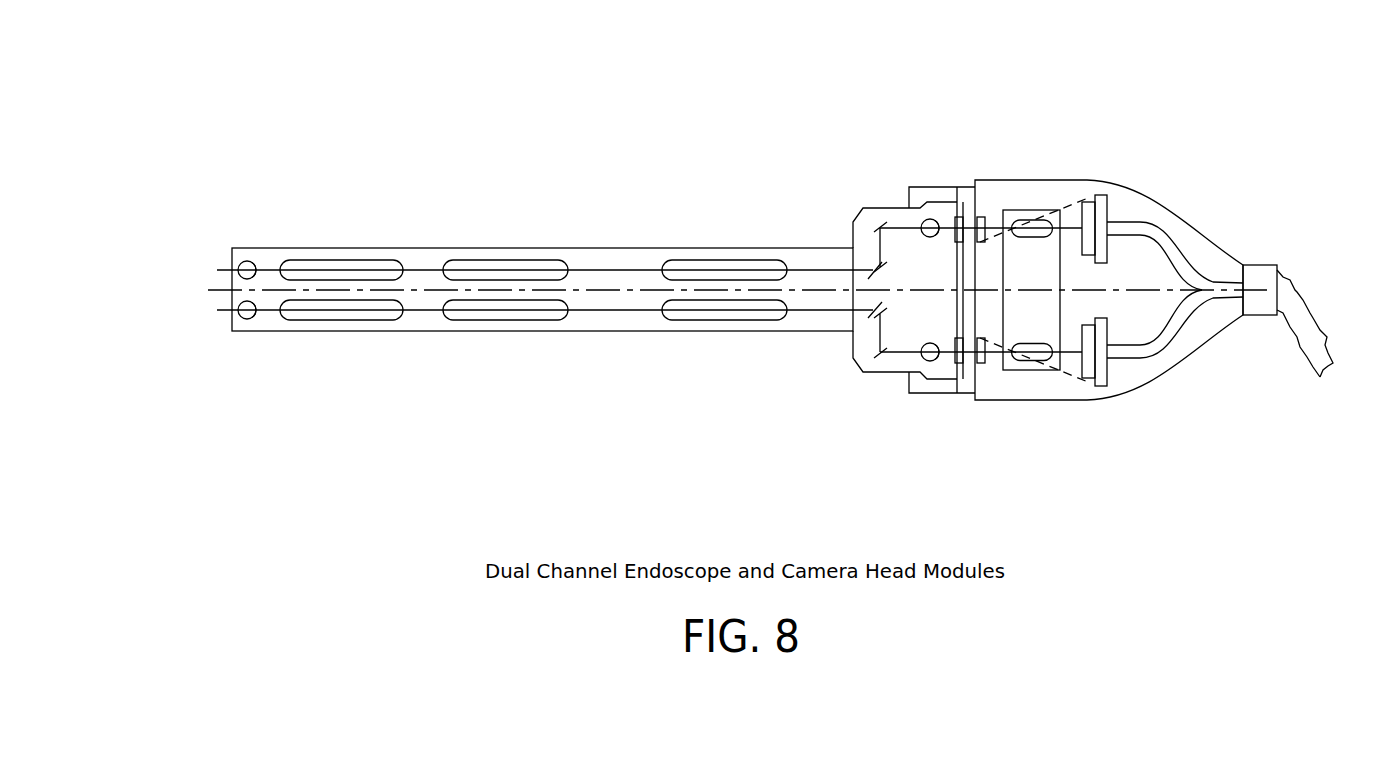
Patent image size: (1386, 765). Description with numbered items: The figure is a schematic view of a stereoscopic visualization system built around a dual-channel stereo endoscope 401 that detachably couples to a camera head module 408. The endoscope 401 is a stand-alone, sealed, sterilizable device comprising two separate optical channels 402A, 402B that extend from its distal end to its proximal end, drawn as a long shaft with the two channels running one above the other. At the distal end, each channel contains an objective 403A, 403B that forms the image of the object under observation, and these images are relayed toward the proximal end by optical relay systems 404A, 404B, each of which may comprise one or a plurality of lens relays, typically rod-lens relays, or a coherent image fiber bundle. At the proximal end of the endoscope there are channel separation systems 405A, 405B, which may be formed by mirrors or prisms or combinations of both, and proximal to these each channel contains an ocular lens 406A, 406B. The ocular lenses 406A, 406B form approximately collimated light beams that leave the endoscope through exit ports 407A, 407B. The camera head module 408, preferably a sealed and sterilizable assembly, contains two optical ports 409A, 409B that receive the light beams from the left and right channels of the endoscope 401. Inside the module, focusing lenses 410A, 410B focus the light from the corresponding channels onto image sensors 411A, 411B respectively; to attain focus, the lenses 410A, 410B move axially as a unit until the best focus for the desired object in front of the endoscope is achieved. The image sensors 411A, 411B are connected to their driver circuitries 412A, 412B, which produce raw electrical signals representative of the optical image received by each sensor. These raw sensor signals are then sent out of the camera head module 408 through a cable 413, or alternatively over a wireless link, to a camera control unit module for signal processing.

The endoscope 401 is at (472, 223).
The optical channel 402A is at (638, 237).
The optical channel 402B is at (613, 340).
The objective 403A is at (240, 264).
The objective 403B is at (243, 312).
The optical relay system 404A is at (358, 238).
The optical relay system 404B is at (358, 333).
The channel separation system 405A is at (880, 237).
The channel separation system 405B is at (878, 352).
The ocular lens 406A is at (923, 220).
The ocular lens 406B is at (932, 362).
The exit port 407A is at (958, 215).
The exit port 407B is at (960, 365).
The camera head module 408 is at (1187, 160).
The optical port 409A is at (981, 213).
The optical port 409B is at (981, 367).
The focusing lens 410A is at (1046, 220).
The focusing lens 410B is at (1046, 362).
The image sensor 411A is at (1086, 205).
The image sensor 411B is at (1084, 372).
The driver circuitry 412A is at (1107, 208).
The driver circuitry 412B is at (1107, 377).
The cable 413 is at (1303, 297).